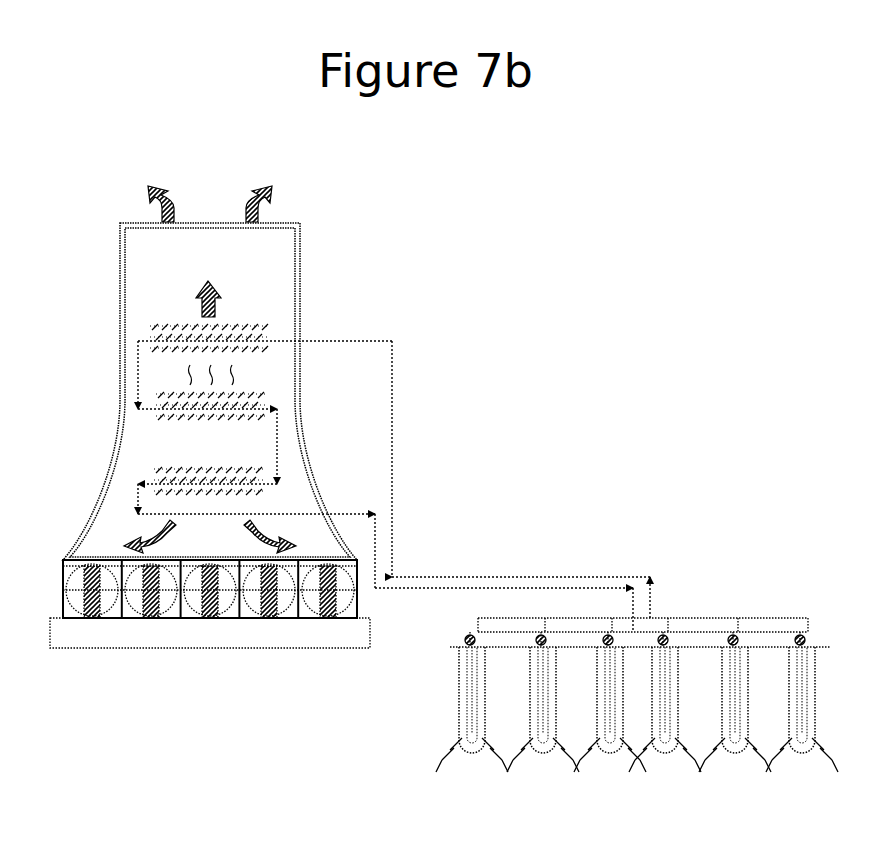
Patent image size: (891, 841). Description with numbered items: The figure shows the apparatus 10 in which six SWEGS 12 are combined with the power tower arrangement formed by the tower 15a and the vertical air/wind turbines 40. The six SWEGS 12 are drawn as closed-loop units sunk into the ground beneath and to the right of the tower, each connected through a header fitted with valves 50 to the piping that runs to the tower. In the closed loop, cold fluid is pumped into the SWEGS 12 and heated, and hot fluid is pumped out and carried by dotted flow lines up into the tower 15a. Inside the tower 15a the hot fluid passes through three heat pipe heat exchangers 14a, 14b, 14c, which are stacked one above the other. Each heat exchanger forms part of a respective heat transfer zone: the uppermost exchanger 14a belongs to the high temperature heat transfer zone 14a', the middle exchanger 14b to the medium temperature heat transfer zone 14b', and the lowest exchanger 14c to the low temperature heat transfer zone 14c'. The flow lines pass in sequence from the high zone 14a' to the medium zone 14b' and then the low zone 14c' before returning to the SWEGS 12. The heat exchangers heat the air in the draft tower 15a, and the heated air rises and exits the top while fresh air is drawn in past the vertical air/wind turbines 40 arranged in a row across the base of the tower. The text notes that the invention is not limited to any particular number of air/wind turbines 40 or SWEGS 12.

The apparatus 10 is at (808, 99).
The SWEGS 12 is at (458, 697).
The heat pipe heat exchanger 14a is at (218, 308).
The heat pipe heat exchanger 14b is at (222, 387).
The heat pipe heat exchanger 14c is at (194, 467).
The high temperature heat transfer zone 14a' is at (351, 473).
The medium temperature heat transfer zone 14b' is at (164, 438).
The low temperature heat transfer zone 14c' is at (340, 543).
The tower 15a is at (302, 293).
The vertical air/wind turbines 40 is at (78, 562).
The valves 50 is at (464, 640).